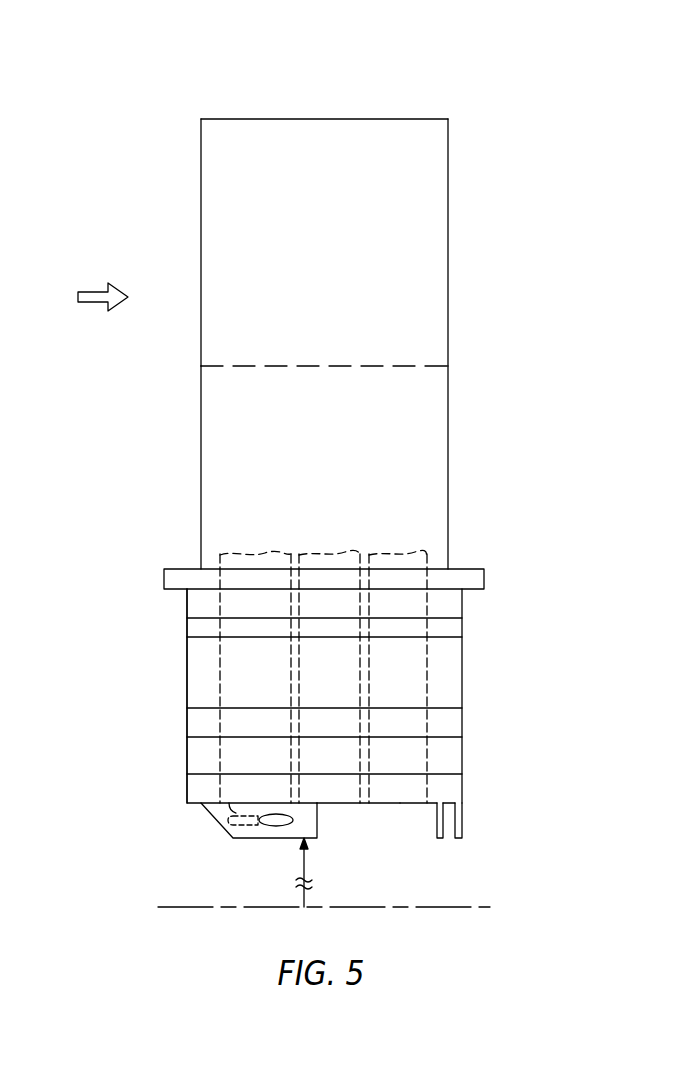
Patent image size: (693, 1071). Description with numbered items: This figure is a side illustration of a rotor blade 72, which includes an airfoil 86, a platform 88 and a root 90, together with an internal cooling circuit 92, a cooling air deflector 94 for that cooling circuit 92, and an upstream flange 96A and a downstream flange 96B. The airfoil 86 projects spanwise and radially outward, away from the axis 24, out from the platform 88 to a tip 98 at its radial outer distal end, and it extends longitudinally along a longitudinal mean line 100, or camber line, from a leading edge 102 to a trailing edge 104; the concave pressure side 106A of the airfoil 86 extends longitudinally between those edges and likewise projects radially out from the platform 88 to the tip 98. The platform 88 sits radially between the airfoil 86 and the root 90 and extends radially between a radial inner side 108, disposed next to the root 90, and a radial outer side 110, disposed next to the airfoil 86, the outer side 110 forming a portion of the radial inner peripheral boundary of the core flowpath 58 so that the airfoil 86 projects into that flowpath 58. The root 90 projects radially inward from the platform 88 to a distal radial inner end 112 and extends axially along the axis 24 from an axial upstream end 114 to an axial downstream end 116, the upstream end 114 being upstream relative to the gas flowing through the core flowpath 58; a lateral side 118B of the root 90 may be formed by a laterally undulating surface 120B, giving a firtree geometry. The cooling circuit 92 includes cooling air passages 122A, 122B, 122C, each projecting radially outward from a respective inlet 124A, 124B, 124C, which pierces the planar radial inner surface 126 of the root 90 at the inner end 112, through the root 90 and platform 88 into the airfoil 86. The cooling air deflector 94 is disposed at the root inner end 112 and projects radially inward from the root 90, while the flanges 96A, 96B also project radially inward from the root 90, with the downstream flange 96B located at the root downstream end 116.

The rotor blade 72 is at (484, 117).
The tip 98 is at (263, 119).
The leading edge 102 is at (200, 338).
The radial outer side 110 is at (213, 569).
The airfoil 86 is at (458, 253).
The trailing edge 104 is at (448, 338).
The longitudinal mean line 100 is at (275, 366).
The core flowpath 58 is at (157, 268).
The pressure side 106A is at (345, 477).
The platform 88 is at (498, 578).
The root 90 is at (470, 680).
The radial inner side 108 is at (207, 589).
The axial upstream end 114 is at (187, 692).
The lateral side 118B is at (443, 660).
The laterally undulating surface 120B is at (410, 668).
The axial downstream end 116 is at (462, 700).
The internal cooling circuit 92 is at (440, 755).
The cooling air passage 122A is at (218, 748).
The cooling air passage 122B is at (360, 700).
The cooling air passage 122C is at (368, 597).
The cooling air deflector 94 is at (236, 847).
The inlet 124A is at (232, 816).
The inlet 124B is at (335, 803).
The distal radial inner end 112 is at (387, 803).
The radial inner surface 126 is at (413, 839).
The inlet 124C is at (407, 803).
The upstream flange 96A is at (440, 838).
The downstream flange 96B is at (459, 838).
The axis 24 is at (175, 907).